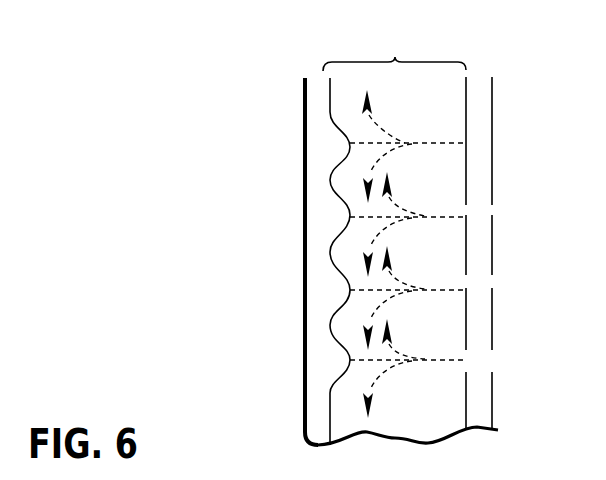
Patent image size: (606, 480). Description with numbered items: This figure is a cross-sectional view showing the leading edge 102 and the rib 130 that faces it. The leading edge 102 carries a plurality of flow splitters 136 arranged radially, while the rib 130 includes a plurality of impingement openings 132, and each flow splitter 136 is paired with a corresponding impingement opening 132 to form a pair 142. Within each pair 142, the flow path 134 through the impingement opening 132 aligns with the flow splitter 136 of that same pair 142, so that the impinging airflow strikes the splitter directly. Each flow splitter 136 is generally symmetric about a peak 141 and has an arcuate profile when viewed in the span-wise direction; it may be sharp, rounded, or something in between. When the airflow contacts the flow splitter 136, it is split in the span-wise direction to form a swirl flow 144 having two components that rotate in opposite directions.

The leading edge 102 is at (317, 122).
The rib 130 is at (493, 89).
The impingement opening 132 is at (477, 139).
The flow path 134 is at (417, 141).
The flow splitter 136 is at (348, 148).
The peak 141 is at (347, 290).
The pair 142 is at (394, 53).
The swirl flow 144 is at (393, 202).